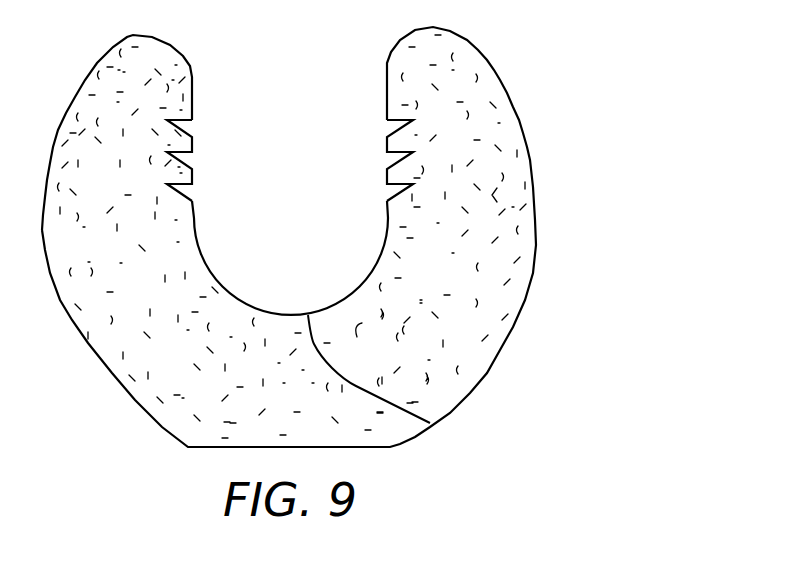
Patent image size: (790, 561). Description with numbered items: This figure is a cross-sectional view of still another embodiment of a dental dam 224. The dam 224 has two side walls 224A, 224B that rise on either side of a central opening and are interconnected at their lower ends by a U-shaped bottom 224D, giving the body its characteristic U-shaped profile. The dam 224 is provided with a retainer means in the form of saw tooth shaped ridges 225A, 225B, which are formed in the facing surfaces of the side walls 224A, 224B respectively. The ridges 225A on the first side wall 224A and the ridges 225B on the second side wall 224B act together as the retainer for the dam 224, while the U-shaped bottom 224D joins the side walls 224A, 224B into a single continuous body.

The dam 224 is at (543, 250).
The side wall 224A is at (192, 77).
The side wall 224B is at (387, 83).
The saw tooth shaped ridges 225A is at (209, 158).
The saw tooth shaped ridges 225B is at (369, 161).
The U-shaped bottom 224D is at (430, 423).